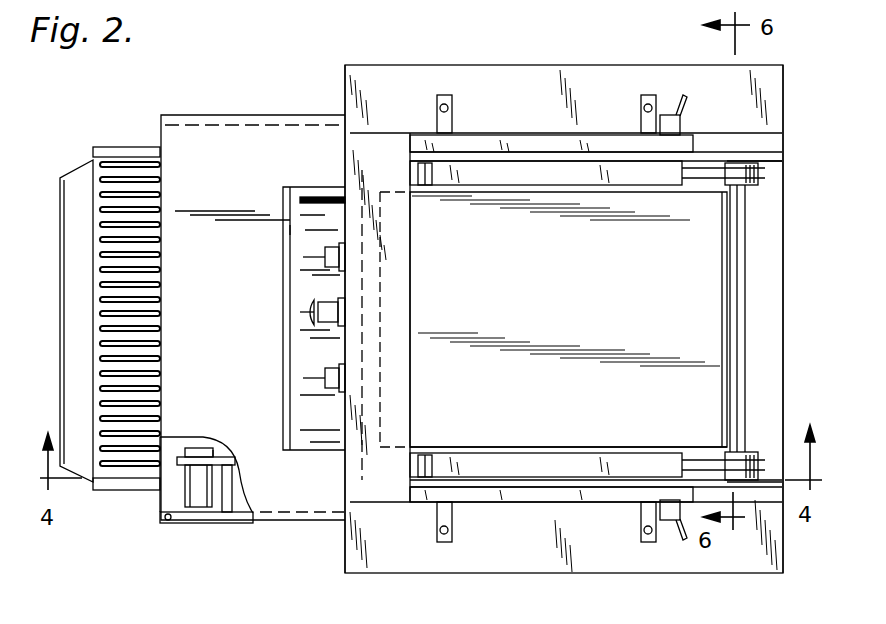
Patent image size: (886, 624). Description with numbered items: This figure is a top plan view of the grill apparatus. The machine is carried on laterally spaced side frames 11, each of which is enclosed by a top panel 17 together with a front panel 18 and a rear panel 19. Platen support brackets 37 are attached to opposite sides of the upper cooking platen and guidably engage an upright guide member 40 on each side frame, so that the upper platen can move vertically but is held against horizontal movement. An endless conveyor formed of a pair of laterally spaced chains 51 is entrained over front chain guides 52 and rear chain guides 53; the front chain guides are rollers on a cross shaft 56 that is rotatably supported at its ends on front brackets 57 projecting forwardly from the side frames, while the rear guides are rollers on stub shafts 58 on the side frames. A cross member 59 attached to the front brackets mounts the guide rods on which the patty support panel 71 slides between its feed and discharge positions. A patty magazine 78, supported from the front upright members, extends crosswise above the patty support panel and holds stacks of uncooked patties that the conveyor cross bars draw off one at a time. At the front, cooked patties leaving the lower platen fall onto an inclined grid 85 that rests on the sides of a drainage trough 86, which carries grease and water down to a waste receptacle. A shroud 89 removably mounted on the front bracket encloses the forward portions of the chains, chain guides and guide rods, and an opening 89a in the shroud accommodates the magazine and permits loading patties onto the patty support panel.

The side frames 11 is at (585, 64).
The top panel 17 is at (503, 72).
The front panel 18 is at (344, 92).
The rear panel 19 is at (784, 118).
The platen support brackets 37 is at (475, 137).
The upright guide member 40 is at (688, 500).
The chains 51 is at (222, 452).
The front chain guides 52 is at (206, 512).
The rear chain guides 53 is at (760, 170).
The cross shaft 56 is at (199, 447).
The front brackets 57 is at (237, 516).
The stub shafts 58 is at (740, 163).
The cross member 59 is at (232, 484).
The patty support panel 71 is at (292, 228).
The patty magazine 78 is at (337, 198).
The grid 85 is at (145, 172).
The drainage trough 86 is at (97, 151).
The shroud 89 is at (262, 160).
The opening 89a is at (287, 305).